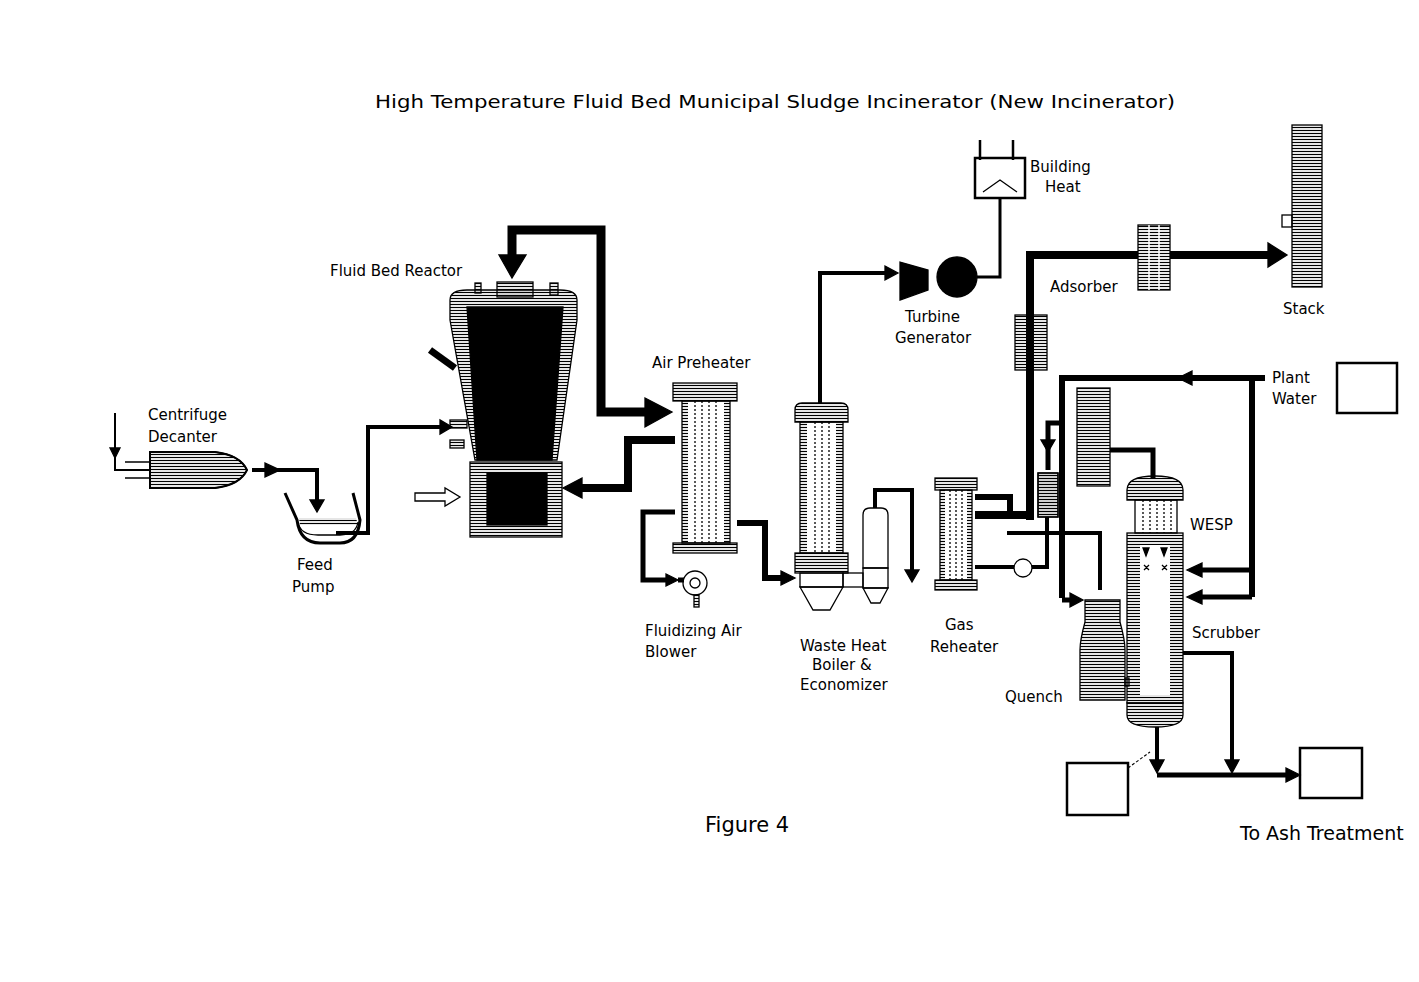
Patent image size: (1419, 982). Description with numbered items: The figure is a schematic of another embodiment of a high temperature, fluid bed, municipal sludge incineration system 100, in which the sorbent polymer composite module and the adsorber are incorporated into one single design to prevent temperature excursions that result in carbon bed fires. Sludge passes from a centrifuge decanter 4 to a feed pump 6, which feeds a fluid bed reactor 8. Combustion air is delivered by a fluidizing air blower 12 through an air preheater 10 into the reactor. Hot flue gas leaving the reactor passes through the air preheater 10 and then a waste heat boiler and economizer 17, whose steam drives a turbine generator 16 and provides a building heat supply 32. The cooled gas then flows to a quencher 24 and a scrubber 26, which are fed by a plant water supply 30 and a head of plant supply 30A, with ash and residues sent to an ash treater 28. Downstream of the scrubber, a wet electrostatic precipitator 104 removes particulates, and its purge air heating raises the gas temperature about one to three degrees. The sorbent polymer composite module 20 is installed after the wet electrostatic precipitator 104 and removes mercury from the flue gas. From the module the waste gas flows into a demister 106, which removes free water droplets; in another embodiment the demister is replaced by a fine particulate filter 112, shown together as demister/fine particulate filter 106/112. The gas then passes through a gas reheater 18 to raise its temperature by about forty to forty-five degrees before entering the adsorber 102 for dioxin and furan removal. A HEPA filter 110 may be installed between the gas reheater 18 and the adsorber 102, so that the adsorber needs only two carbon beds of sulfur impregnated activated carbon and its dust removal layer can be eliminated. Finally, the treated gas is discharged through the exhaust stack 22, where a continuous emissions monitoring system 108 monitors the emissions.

The high temperature, fluid bed, municipal sludge incineration system 100 is at (228, 171).
The centrifuge decanter 4 is at (200, 490).
The feed pump 6 is at (329, 513).
The fluid bed reactor 8 is at (448, 323).
The air preheater 10 is at (678, 472).
The fluidizing air blower 12 is at (683, 590).
The turbine generator 16 is at (918, 258).
The waste heat boiler and economizer 17 is at (807, 603).
The gas reheater 18 is at (950, 600).
The sorbent polymer composite module (SPC) 20 is at (1137, 374).
The exhaust stack 22 is at (1325, 197).
The quencher 24 is at (1085, 702).
The scrubber 26 is at (1187, 613).
The ash treater 28 is at (1333, 748).
The plant water supply 30 is at (1365, 415).
The head of plant supply 30A is at (1067, 790).
The building heat supply 32 is at (975, 172).
The adsorber 102 is at (1178, 233).
The wet electrostatic precipitator 104 is at (1187, 493).
The demister 106 is at (1045, 522).
The fine particulate filter 112 is at (1045, 522).
The continuous emissions monitoring system (CEMS) 108 is at (1280, 214).
The HEPA filter 110 is at (1050, 335).